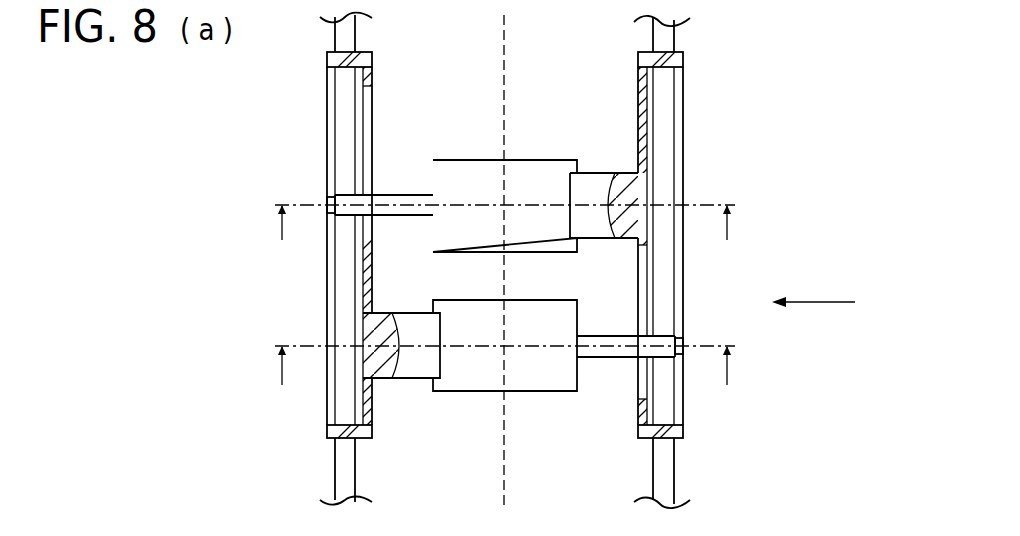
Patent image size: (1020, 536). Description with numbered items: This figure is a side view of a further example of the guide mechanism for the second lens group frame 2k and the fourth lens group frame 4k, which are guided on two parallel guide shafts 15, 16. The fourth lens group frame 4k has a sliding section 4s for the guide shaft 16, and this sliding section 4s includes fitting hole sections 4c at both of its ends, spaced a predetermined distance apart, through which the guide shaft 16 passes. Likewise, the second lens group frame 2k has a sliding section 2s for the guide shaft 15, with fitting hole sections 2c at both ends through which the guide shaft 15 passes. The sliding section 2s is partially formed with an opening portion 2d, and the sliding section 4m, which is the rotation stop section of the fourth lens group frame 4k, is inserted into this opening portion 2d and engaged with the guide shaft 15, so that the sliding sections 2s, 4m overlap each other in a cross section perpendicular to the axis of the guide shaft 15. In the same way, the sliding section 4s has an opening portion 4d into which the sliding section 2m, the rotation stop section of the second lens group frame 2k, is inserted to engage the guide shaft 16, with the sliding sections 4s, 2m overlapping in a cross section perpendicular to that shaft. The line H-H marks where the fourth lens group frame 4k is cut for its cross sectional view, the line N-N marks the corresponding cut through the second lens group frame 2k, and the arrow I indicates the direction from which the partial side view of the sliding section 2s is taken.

The fitting hole section 2c is at (675, 59).
The opening portion 2d is at (643, 283).
The second lens group frame 2k is at (551, 160).
The sliding section (rotation stop section of second lens group frame) 2m is at (349, 195).
The sliding section 2s is at (641, 85).
The fitting hole section 4c is at (335, 59).
The opening portion 4d is at (368, 117).
The fourth lens group frame 4k is at (557, 391).
The sliding section (rotation stop section of fourth lens group frame) 4m is at (672, 342).
The sliding section 4s is at (368, 400).
The guide shaft 15 is at (665, 480).
The guide shaft 16 is at (340, 475).
The line N- N is at (504, 242).
The line H- H is at (504, 381).
The I direction I is at (819, 302).